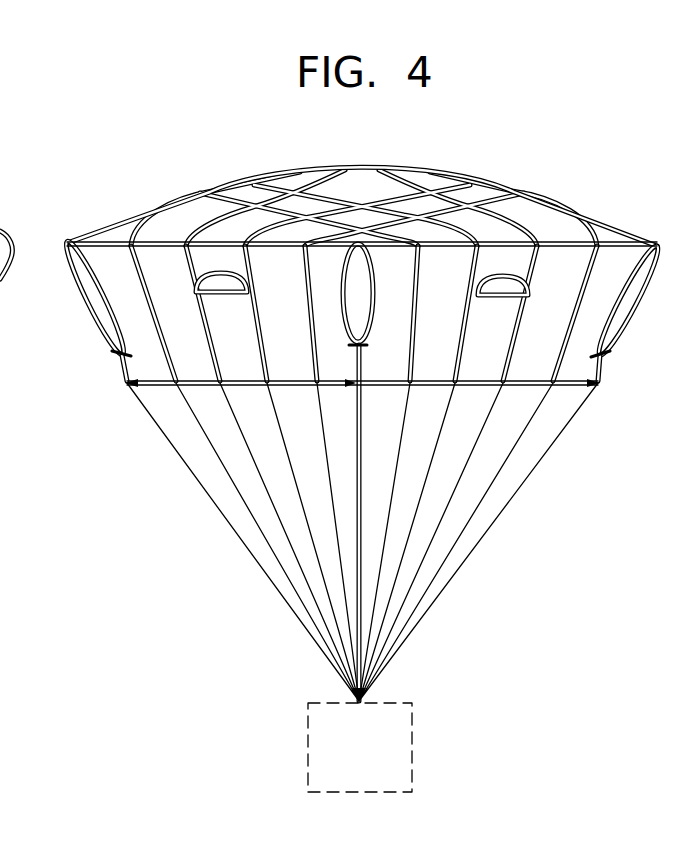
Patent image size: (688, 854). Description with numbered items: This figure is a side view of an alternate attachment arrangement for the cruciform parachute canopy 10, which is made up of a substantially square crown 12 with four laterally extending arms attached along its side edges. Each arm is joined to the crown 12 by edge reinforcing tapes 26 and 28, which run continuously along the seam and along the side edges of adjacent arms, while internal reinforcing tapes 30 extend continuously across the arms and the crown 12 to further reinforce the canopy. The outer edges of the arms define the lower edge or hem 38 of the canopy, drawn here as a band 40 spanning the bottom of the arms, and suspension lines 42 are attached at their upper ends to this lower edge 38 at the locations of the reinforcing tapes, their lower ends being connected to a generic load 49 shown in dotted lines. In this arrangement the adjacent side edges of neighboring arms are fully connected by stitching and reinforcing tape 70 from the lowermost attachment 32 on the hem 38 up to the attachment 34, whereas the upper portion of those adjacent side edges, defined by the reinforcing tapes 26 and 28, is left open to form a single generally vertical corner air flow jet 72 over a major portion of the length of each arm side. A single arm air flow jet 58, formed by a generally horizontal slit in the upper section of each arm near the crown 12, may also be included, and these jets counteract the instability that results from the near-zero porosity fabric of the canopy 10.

The canopy 10 is at (40, 289).
The crown 12 is at (262, 188).
The edge reinforcing tape 26 is at (65, 266).
The edge reinforcing tape 28 is at (98, 283).
The internal reinforcing tapes 30 is at (355, 168).
The lowermost attachment 32 is at (125, 387).
The attachment 34 is at (118, 356).
The lower edge 38 is at (160, 387).
The lower band 40 is at (243, 388).
The suspension lines 42 is at (285, 538).
The generic load 49 is at (327, 733).
The arm air flow jets 58 is at (227, 287).
The reinforcing tape 70 is at (120, 381).
The corner air flow jet 72 is at (87, 293).